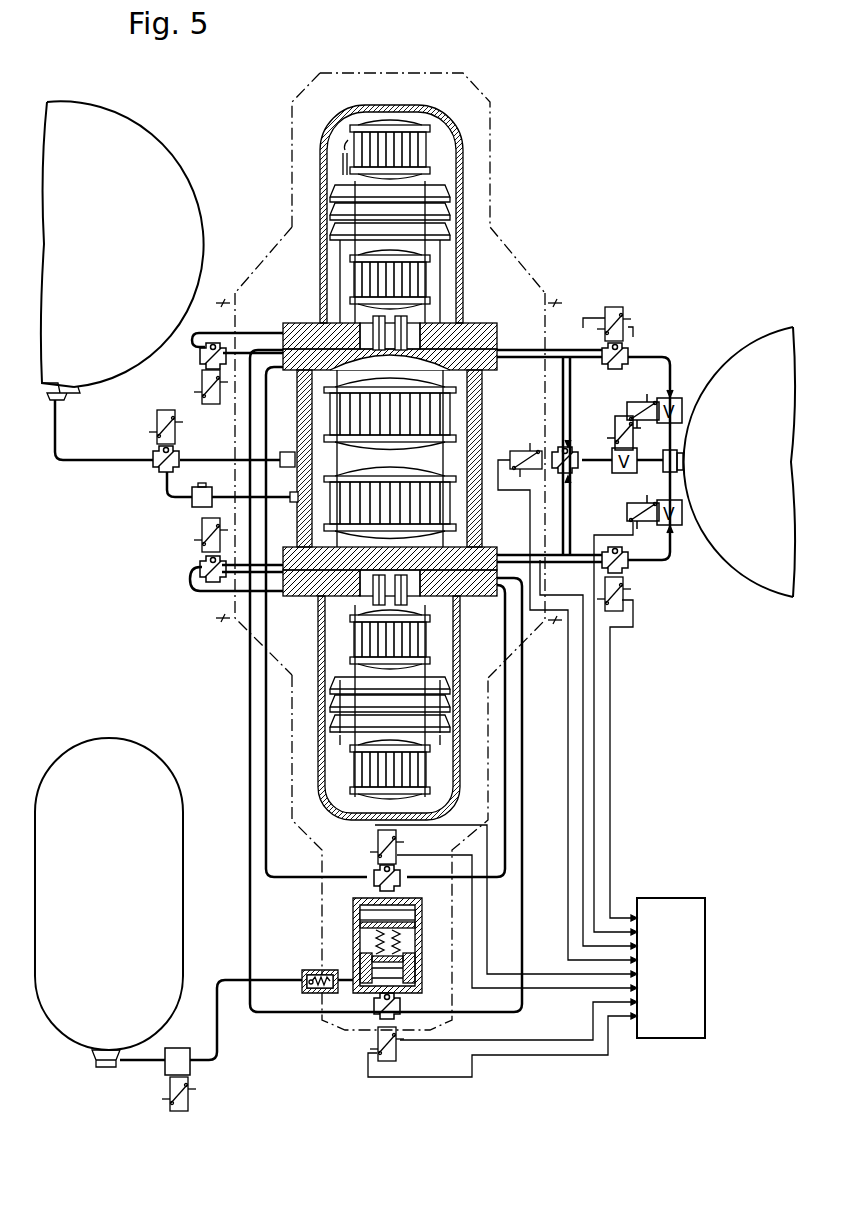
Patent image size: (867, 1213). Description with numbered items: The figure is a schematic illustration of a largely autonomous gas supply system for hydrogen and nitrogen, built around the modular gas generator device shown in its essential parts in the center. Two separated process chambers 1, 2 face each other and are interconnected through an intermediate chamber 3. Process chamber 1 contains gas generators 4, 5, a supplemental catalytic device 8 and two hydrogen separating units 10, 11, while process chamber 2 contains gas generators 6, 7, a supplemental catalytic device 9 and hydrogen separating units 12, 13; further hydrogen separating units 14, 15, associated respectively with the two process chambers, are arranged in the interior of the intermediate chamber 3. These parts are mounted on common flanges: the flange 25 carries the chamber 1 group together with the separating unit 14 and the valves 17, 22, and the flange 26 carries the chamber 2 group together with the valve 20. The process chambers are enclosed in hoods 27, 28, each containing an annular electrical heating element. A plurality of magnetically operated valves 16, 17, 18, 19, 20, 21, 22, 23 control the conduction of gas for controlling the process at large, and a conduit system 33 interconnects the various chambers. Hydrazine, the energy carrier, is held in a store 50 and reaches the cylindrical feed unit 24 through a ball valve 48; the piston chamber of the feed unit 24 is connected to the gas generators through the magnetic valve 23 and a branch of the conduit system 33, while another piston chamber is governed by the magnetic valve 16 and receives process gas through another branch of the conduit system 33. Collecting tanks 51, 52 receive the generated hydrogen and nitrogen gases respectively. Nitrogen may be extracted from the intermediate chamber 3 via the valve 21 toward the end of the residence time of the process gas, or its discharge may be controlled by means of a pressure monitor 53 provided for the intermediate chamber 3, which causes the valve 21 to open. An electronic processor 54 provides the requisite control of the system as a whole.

The process chamber 1 is at (300, 733).
The process chamber 2 is at (480, 160).
The intermediate chamber 3 is at (292, 420).
The gas generator 4 is at (415, 598).
The gas generator 5 is at (368, 598).
The gas generator 6 is at (373, 322).
The gas generator 7 is at (412, 325).
The supplemental catalytic device 8 is at (330, 700).
The supplemental catalytic device 9 is at (325, 210).
The hydrogen separating unit 10 is at (375, 762).
The hydrogen separating unit 11 is at (360, 640).
The hydrogen separating unit 12 is at (370, 275).
The hydrogen separating unit 13 is at (375, 140).
The hydrogen separating unit 14 is at (440, 518).
The hydrogen separating unit 15 is at (440, 412).
The magnetically operated valve 16 is at (372, 885).
The magnetically operated valve 17 is at (630, 560).
The magnetically operated valve 18 is at (580, 472).
The magnetically operated valve 19 is at (630, 355).
The magnetically operated valve 20 is at (207, 360).
The magnetically operated valve 21 is at (160, 472).
The magnetically operated valve 22 is at (202, 565).
The magnetically operated valve 23 is at (380, 1015).
The feed unit 24 is at (346, 928).
The flange 25 is at (290, 585).
The flange 26 is at (292, 330).
The hood 27 is at (462, 720).
The hood 28 is at (462, 205).
The conduit system 33 is at (495, 880).
The ball valve 48 is at (310, 975).
The store 50 is at (146, 760).
The collecting tank 51 is at (757, 580).
The collecting tank 52 is at (163, 150).
The pressure monitor 53 is at (192, 505).
The electronic processor 54 is at (665, 905).